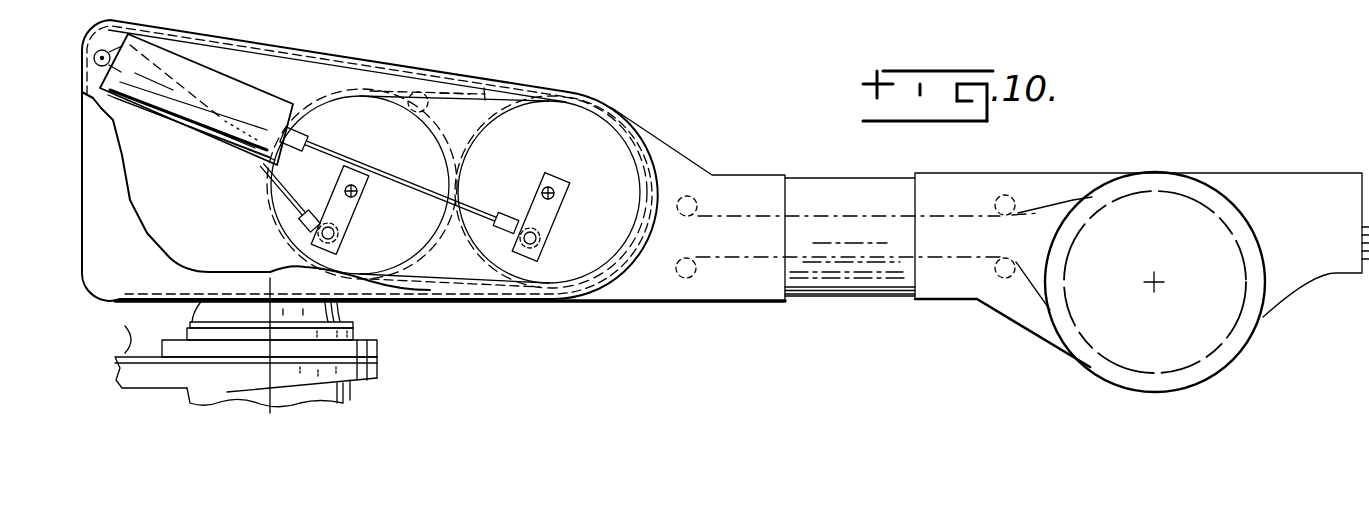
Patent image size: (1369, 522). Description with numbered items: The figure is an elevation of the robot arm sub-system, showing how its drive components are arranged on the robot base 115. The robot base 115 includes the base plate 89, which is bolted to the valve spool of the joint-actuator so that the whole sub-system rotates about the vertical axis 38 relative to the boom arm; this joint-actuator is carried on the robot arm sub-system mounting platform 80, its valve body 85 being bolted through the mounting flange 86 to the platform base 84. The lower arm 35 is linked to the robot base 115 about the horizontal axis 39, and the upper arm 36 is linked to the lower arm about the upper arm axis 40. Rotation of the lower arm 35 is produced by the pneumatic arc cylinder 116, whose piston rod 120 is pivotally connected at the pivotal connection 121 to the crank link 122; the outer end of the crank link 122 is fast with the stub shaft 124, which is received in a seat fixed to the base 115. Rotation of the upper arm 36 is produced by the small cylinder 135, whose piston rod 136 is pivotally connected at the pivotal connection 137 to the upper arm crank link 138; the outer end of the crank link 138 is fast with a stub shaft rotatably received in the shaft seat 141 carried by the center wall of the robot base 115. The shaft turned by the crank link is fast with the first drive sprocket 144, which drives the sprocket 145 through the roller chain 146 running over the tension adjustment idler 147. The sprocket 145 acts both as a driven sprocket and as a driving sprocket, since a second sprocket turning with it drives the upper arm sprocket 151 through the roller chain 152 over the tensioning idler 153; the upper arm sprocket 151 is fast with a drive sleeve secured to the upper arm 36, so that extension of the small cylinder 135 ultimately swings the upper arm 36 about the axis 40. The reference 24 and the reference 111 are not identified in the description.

The arm 24 is at (727, 148).
The lower arm 35 is at (866, 294).
The upper arm 36 is at (1365, 280).
The vertical axis 38 is at (268, 371).
The horizontal axis 39 is at (553, 186).
The upper arm axis 40 is at (1157, 285).
The robot arm sub-system mounting platform 80 is at (392, 380).
The platform base 84 is at (112, 334).
The valve body 85 is at (186, 398).
The mounting flange 86 is at (380, 347).
The base plate 89 is at (200, 307).
The pivot pin 111 is at (107, 50).
The robot base 115 is at (340, 54).
The pneumatic arc cylinder 116 is at (276, 93).
The piston rod 120 is at (390, 172).
The pivotal connection 121 is at (540, 242).
The crank link 122 is at (559, 213).
The stub shaft 124 is at (540, 183).
The small cylinder 135 is at (222, 171).
The piston rod 136 is at (270, 210).
The pivotal connection 137 is at (318, 237).
The upper arm crank link 138 is at (356, 219).
The shaft seat 141 is at (349, 180).
The first drive sprocket 144 is at (431, 137).
The sprocket 145 is at (604, 116).
The roller chain 146 is at (485, 92).
The tension adjustment idler 147 is at (426, 93).
The upper arm sprocket 151 is at (1173, 193).
The roller chain 152 is at (878, 213).
The tensioning idler 153 is at (1008, 193).